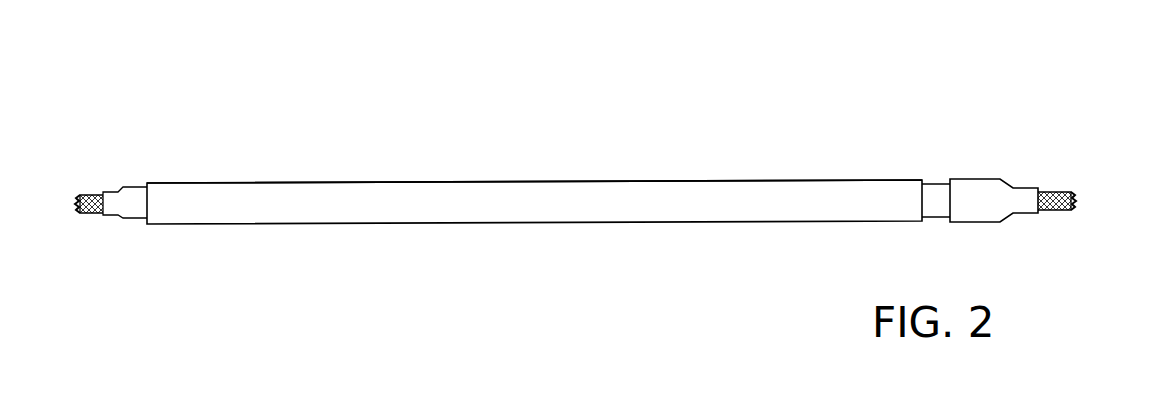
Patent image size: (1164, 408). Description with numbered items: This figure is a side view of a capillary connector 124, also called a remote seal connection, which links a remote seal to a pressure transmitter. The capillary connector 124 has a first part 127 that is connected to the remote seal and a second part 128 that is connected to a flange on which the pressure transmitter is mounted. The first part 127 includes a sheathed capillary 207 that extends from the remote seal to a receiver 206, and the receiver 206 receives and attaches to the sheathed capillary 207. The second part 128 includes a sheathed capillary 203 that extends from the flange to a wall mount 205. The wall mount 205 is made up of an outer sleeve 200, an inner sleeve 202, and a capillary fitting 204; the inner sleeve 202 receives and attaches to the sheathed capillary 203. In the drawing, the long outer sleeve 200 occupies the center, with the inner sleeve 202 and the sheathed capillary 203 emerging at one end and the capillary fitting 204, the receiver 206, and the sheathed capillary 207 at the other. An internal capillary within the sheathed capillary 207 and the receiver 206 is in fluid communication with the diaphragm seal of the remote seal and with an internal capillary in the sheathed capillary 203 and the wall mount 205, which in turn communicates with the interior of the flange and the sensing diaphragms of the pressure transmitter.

The capillary connector 124 is at (1021, 168).
The first part 127 is at (1044, 180).
The second part 128 is at (153, 187).
The outer sleeve 200 is at (478, 213).
The inner sleeve 202 is at (128, 212).
The sheathed capillary 203 is at (93, 194).
The capillary fitting 204 is at (937, 195).
The wall mount 205 is at (448, 180).
The receiver 206 is at (993, 225).
The sheathed capillary 207 is at (1047, 192).